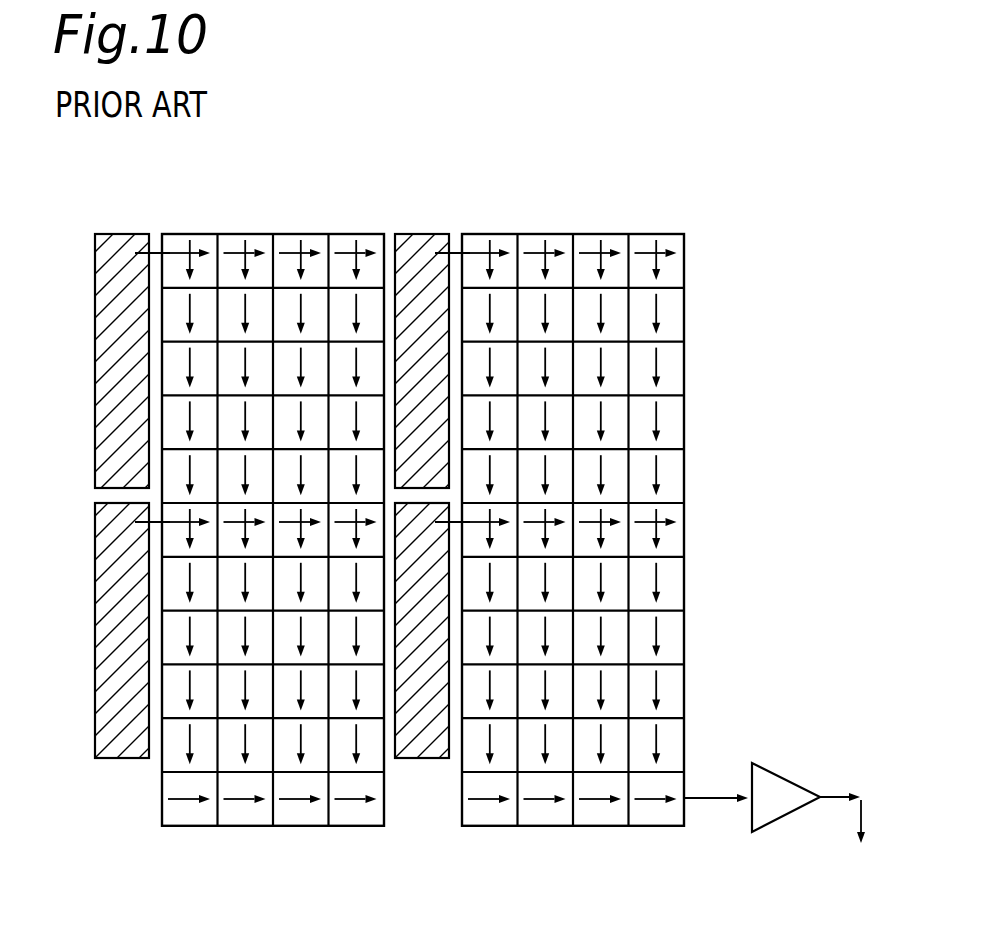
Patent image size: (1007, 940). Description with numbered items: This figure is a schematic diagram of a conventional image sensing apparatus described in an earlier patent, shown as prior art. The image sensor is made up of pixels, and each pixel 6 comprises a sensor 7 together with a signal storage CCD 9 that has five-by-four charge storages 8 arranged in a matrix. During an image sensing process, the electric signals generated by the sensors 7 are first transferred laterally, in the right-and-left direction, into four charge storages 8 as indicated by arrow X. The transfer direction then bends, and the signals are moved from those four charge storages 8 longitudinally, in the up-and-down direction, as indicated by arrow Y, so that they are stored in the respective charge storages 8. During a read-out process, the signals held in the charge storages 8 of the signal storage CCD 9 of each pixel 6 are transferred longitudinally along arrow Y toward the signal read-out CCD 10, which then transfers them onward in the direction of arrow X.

The pixel 6 is at (331, 196).
The sensor 7 is at (416, 232).
The charge storage 8 is at (200, 232).
The signal storage CCD 9 is at (249, 221).
The signal read-out CCD 10 is at (596, 830).
The arrow X is at (178, 250).
The arrow Y is at (657, 467).